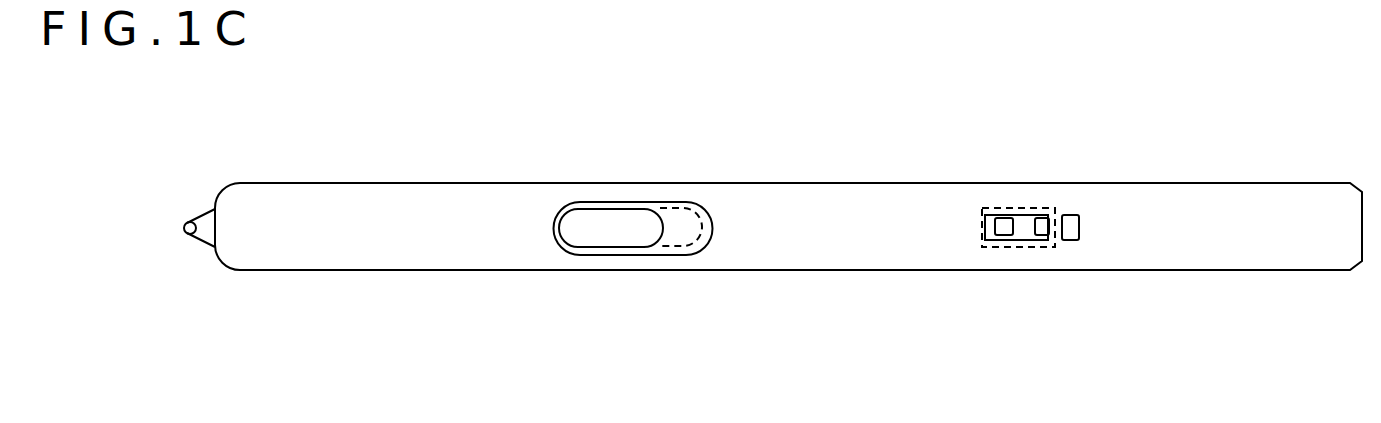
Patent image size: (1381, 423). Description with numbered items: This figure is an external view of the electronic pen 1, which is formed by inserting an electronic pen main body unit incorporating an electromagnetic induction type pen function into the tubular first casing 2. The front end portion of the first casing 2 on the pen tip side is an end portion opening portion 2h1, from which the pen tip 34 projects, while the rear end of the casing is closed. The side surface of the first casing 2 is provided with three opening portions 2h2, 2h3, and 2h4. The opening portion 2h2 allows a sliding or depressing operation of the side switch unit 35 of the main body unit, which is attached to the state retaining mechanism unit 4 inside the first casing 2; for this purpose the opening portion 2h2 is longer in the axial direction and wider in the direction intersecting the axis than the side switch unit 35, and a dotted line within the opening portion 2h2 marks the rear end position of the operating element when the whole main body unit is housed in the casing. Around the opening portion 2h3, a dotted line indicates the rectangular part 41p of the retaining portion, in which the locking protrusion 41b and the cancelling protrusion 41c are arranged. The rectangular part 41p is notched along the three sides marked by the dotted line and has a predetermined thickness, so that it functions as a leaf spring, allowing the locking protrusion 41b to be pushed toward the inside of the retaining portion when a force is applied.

The electronic pen 1 is at (1199, 175).
The first casing 2 is at (837, 193).
The end portion opening portion 2h1 is at (206, 200).
The opening portion 2h2 is at (670, 207).
The opening portion 2h3 is at (1020, 222).
The opening portion 2h4 is at (1072, 212).
The pen tip 34 is at (190, 233).
The side switch unit 35 is at (600, 237).
The rectangular part 41p is at (998, 207).
The locking protrusion 41b is at (1042, 238).
The cancelling protrusion 41c is at (1003, 233).
The state retaining mechanism unit 4 is at (1065, 0).